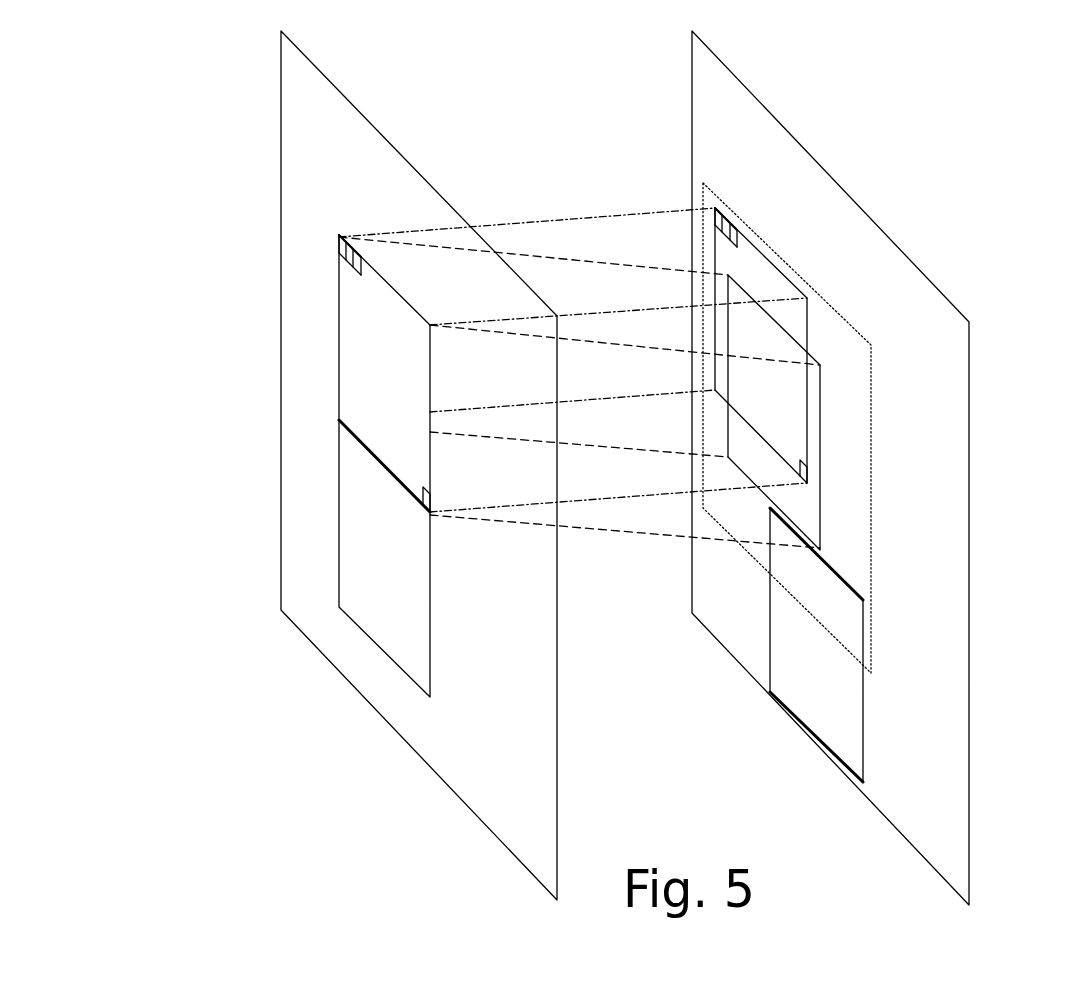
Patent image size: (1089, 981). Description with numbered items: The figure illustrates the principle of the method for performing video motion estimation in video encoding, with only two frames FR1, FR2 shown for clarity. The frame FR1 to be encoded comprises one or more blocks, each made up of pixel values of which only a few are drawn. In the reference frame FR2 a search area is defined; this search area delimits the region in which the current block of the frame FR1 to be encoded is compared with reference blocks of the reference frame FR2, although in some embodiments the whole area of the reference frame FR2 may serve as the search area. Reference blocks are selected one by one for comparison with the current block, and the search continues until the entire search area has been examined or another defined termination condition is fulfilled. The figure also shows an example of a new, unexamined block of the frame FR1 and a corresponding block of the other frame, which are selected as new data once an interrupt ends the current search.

The frame to be encoded FR1 is at (281, 168).
The reference frame FR2 is at (692, 80).